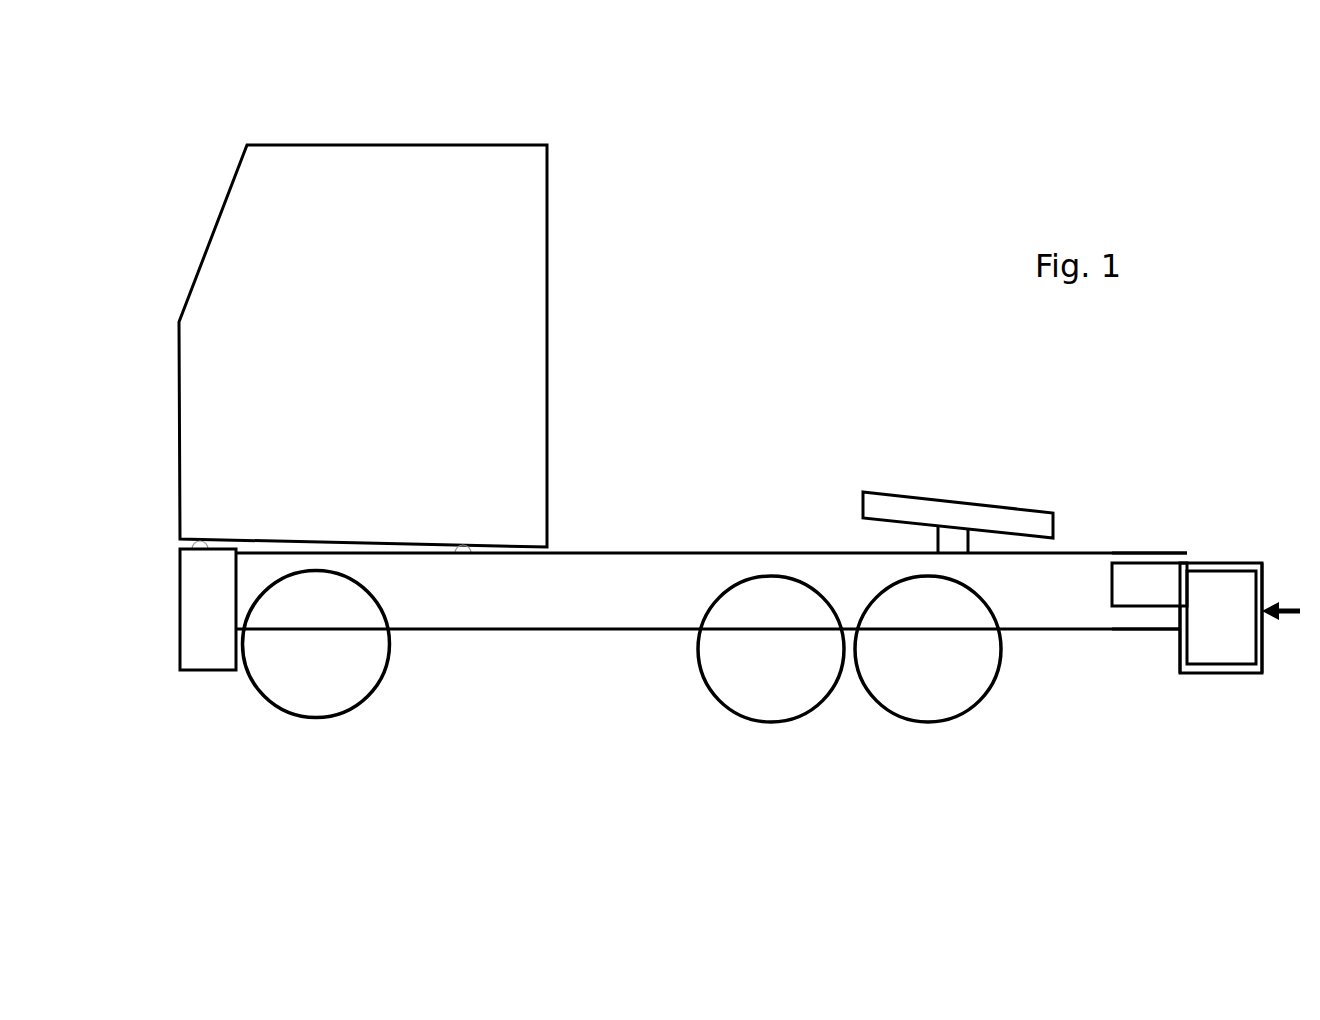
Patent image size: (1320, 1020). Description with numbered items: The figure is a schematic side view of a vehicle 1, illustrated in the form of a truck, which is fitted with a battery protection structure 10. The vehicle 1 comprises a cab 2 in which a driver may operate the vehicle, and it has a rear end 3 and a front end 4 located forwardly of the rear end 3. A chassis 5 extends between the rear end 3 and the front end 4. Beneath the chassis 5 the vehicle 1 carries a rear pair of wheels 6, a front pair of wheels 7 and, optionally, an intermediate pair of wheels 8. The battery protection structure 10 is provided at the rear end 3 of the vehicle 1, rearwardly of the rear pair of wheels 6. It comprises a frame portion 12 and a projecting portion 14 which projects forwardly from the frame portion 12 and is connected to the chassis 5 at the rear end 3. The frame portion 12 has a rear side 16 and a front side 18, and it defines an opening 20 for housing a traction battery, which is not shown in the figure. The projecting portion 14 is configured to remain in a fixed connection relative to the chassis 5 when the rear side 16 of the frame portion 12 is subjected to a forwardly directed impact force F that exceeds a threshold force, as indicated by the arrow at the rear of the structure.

The vehicle 1 is at (154, 176).
The cab 2 is at (245, 280).
The rear end 3 is at (1181, 553).
The front end 4 is at (181, 606).
The chassis 5 is at (610, 605).
The rear pair of wheels 6 is at (927, 712).
The front pair of wheels 7 is at (300, 699).
The intermediate pair of wheels 8 is at (760, 703).
The battery protection structure 10 is at (1223, 508).
The frame portion 12 is at (1193, 670).
The projecting portion 14 is at (1145, 572).
The rear side 16 is at (1262, 577).
The front side 18 is at (1180, 641).
The opening 20 is at (1222, 629).